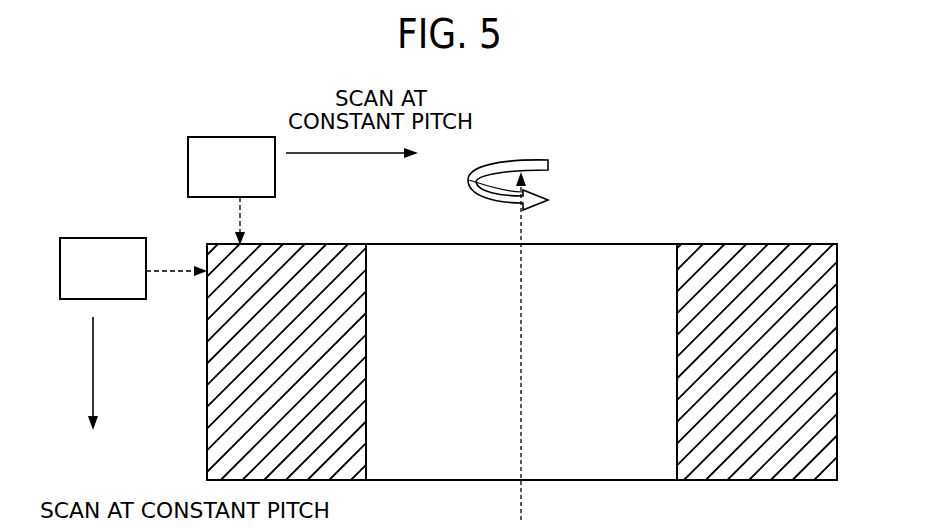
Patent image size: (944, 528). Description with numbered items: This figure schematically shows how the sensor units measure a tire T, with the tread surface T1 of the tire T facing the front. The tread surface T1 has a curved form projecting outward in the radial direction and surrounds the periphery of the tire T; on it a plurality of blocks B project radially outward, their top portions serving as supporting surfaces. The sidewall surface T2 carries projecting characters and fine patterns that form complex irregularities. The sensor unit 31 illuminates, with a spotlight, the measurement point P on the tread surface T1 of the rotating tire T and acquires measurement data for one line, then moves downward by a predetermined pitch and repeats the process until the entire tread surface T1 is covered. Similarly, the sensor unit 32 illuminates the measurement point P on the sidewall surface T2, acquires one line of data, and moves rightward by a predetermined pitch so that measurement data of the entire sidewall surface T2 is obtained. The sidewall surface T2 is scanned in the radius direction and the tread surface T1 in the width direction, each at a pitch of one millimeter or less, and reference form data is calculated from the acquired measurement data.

The sensor unit 31 is at (60, 270).
The sensor unit 32 is at (275, 187).
The measurement point P is at (242, 241).
The tire T is at (613, 244).
The tread surface T1 is at (207, 405).
The sidewall surface T2 is at (335, 244).
The block B is at (522, 383).